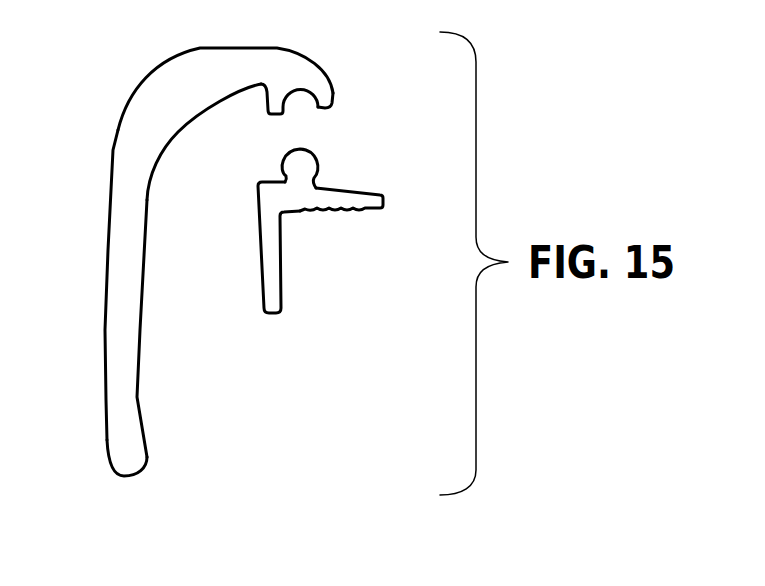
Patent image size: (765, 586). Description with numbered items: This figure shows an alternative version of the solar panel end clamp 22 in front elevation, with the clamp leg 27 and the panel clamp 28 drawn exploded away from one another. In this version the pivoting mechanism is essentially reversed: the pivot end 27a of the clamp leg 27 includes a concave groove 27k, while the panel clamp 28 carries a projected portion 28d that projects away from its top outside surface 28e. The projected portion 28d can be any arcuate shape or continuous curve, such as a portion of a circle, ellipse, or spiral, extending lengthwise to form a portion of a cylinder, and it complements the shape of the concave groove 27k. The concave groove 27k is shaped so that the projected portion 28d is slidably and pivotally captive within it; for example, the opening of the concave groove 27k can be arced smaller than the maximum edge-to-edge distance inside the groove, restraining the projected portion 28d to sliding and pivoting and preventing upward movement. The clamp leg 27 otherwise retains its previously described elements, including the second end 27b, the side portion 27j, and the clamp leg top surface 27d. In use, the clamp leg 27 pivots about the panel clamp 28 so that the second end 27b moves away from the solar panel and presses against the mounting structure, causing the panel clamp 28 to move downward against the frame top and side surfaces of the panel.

The solar panel end clamp 22 is at (300, 382).
The clamp leg 27 is at (103, 175).
The pivot end 27a is at (322, 75).
The second end 27b is at (105, 448).
The clamp leg top surface 27d is at (210, 46).
The side portion 27j is at (103, 350).
The concave groove 27k is at (300, 88).
The panel clamp 28 is at (248, 245).
The projected portion 28d is at (318, 163).
The top outside surface 28e is at (328, 190).